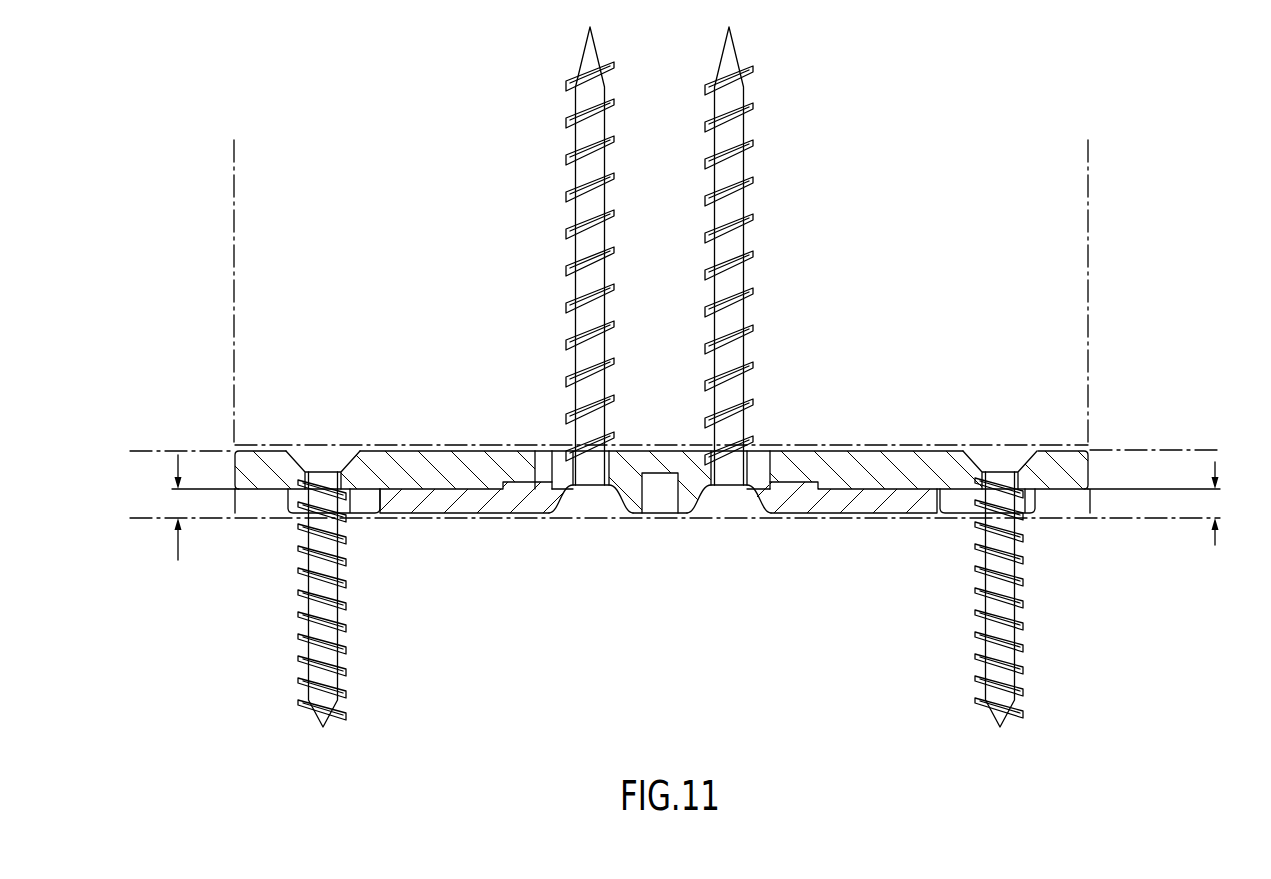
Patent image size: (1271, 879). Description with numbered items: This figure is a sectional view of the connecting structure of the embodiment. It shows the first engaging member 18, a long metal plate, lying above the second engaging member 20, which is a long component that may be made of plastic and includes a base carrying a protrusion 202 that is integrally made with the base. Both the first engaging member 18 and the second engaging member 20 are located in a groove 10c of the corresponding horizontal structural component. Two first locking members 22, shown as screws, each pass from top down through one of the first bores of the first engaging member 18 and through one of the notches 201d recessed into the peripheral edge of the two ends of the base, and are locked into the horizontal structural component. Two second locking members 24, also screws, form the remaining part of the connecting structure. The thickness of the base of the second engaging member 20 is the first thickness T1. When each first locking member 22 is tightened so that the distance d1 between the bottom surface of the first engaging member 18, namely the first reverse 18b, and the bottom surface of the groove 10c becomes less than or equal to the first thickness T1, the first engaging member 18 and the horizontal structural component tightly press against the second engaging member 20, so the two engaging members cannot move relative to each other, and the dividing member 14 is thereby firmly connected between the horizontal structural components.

The groove 10c is at (1070, 500).
The dividing member 14 is at (234, 272).
The first engaging member 18 is at (918, 447).
The first reverse 18b is at (250, 492).
The second engaging member 20 is at (835, 517).
The notches 201d is at (367, 505).
The protrusion 202 is at (663, 447).
The first locking members 22 is at (300, 642).
The second locking members 24 is at (576, 170).
The distance d1 is at (162, 507).
The first thickness T1 is at (1234, 503).